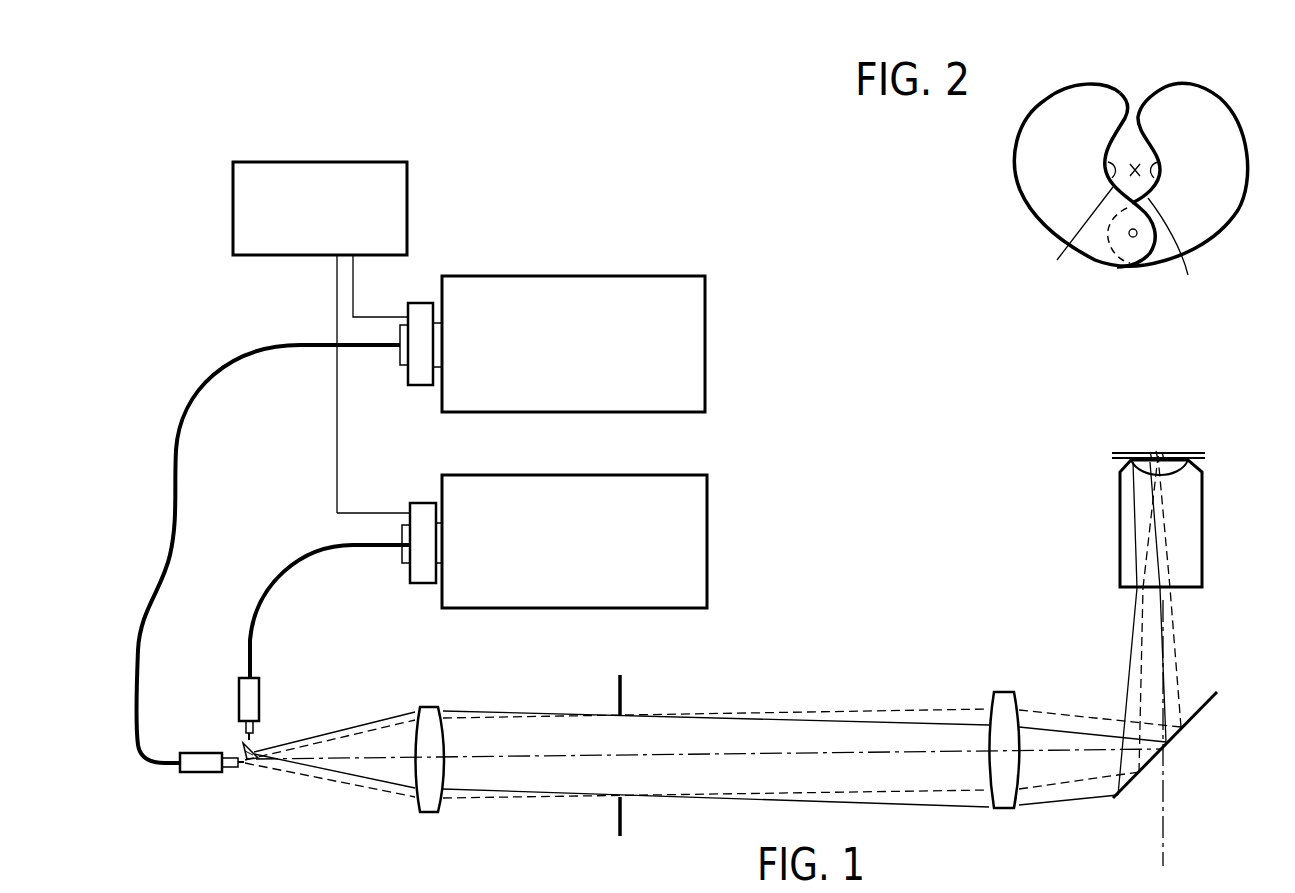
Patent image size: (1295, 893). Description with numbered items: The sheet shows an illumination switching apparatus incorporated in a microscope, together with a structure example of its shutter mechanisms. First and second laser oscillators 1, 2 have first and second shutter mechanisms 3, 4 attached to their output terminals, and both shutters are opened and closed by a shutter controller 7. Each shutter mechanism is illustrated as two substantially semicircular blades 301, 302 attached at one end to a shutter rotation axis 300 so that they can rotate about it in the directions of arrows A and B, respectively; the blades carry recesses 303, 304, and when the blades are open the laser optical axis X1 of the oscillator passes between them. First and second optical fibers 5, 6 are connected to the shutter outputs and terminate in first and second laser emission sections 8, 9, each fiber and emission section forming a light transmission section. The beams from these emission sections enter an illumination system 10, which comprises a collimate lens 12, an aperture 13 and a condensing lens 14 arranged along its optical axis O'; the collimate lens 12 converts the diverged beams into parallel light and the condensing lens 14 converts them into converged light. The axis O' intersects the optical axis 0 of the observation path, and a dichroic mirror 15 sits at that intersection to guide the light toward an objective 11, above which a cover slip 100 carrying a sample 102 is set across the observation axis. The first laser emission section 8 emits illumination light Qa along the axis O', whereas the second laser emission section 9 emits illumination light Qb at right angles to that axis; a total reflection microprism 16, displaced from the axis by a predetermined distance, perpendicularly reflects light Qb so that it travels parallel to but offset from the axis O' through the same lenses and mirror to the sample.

In FIG. 1, the first laser oscillator 1 is at (580, 276).
In FIG. 1, the second laser oscillator 2 is at (582, 476).
In FIG. 1, the first shutter mechanism 3 is at (418, 386).
In FIG. 1, the second shutter mechanism 4 is at (422, 584).
In FIG. 1, the first optical fiber 5 is at (176, 485).
In FIG. 1, the second optical fiber 6 is at (276, 580).
In FIG. 1, the shutter controller 7 is at (408, 207).
In FIG. 1, the first laser emission section 8 is at (198, 775).
In FIG. 1, the second laser emission section 9 is at (260, 686).
In FIG. 1, the illumination system 10 is at (874, 703).
In FIG. 1, the objective 11 is at (1120, 530).
In FIG. 1, the collimate lens 12 is at (431, 815).
In FIG. 1, the aperture 13 is at (618, 822).
In FIG. 1, the condensing lens 14 is at (1010, 810).
In FIG. 1, the dichroic mirror 15 is at (1203, 713).
In FIG. 1, the total reflection microprism 16 is at (259, 745).
In FIG. 1, the cover slip 100 is at (1112, 455).
In FIG. 1, the sample 102 is at (1157, 455).
In FIG. 1, the illumination light Qa is at (306, 777).
In FIG. 1, the illumination light Qb is at (383, 716).
In FIG. 1, the optical axis of the illumination system O' is at (709, 705).
In FIG. 1, the optical axis of the optical observation path 0 is at (1167, 831).
In FIG. 2, the shutter rotation axis 300 is at (1130, 236).
In FIG. 2, the first blade 301 is at (1053, 209).
In FIG. 2, the second blade 302 is at (1225, 153).
In FIG. 2, the recess of first blade 303 is at (1059, 233).
In FIG. 2, the recess of second blade 304 is at (1182, 252).
In FIG. 2, the optical axis of the first laser oscillator X1 is at (1134, 150).
In FIG. 2, the rotation direction A is at (1035, 76).
In FIG. 2, the rotation direction B is at (1228, 73).